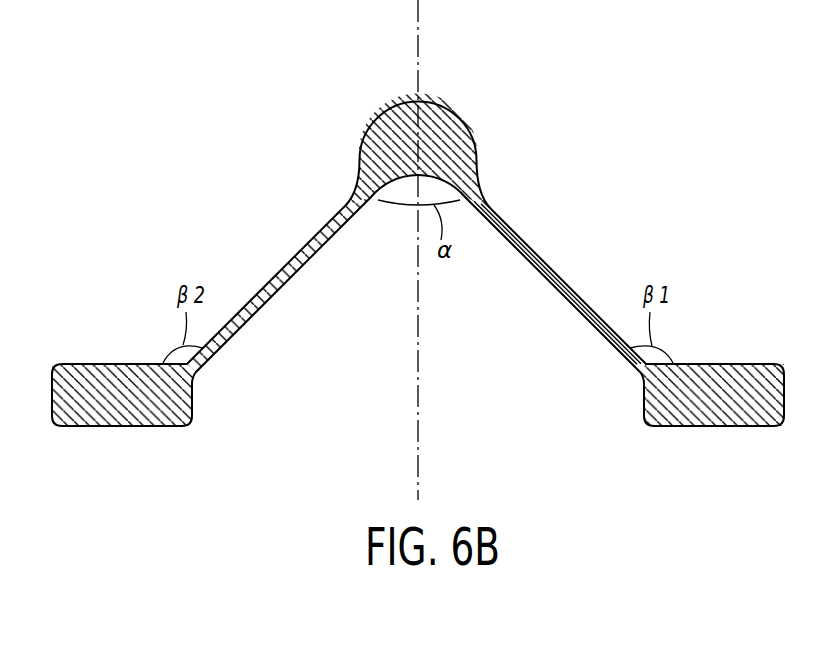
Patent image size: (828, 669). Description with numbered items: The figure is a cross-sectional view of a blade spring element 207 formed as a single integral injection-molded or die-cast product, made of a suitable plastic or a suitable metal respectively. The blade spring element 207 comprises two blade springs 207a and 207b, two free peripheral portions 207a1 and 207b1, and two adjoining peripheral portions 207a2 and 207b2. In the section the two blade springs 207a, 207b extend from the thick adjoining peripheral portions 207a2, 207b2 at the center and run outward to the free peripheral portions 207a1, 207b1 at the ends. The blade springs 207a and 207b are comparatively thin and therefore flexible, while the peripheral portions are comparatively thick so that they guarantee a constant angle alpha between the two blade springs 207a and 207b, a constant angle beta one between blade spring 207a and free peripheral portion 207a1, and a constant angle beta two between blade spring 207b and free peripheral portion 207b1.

The blade spring element 207 is at (605, 189).
The blade spring 207a is at (536, 254).
The blade spring 207b is at (300, 251).
The free peripheral portion 207a1 is at (727, 376).
The free peripheral portion 207b1 is at (100, 376).
The adjoining peripheral portion 207a2 is at (458, 129).
The adjoining peripheral portion 207b2 is at (378, 126).